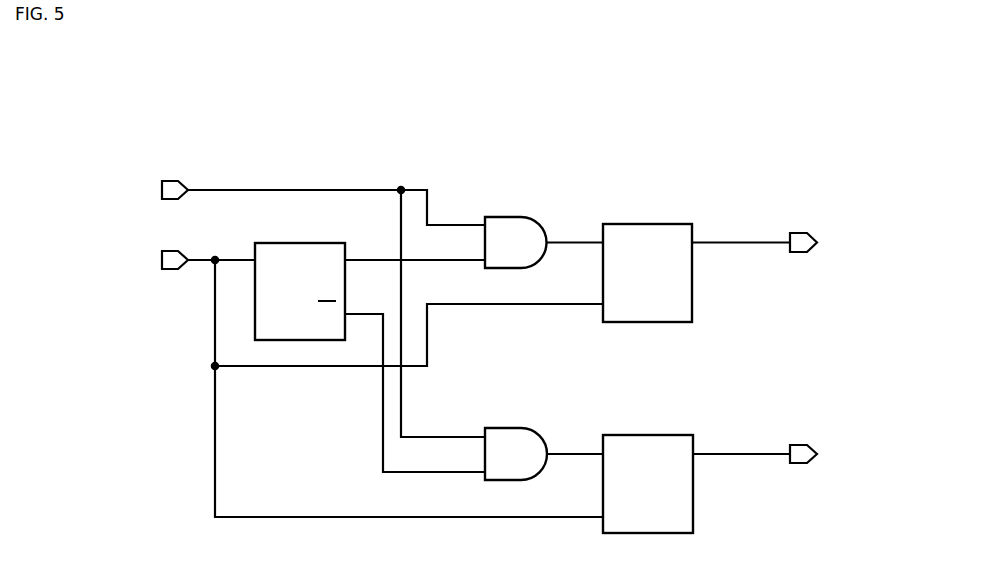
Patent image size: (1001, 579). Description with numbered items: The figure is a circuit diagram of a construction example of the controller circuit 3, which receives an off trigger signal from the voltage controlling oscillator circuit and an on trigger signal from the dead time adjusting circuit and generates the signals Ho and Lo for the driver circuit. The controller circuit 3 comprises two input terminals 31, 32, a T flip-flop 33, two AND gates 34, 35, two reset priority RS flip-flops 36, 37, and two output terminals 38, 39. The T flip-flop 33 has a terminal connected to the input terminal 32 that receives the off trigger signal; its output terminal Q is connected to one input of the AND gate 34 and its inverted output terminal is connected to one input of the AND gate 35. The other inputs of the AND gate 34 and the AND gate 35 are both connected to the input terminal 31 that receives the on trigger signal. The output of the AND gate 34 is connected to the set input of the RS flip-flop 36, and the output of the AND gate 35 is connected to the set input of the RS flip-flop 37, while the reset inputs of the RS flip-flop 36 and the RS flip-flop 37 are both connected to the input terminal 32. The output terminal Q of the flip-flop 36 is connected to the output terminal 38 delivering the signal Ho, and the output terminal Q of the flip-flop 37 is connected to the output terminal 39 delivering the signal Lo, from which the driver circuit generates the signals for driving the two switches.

The controller circuit 3 is at (716, 142).
The input terminal 31 is at (175, 181).
The input terminal 32 is at (174, 250).
The T flip-flop 33 is at (298, 243).
The AND gate 34 is at (508, 216).
The AND gate 35 is at (508, 426).
The reset priority RS flip-flop 36 is at (642, 224).
The reset priority RS flip-flop 37 is at (643, 435).
The output terminal 38 is at (800, 233).
The output terminal 39 is at (800, 445).